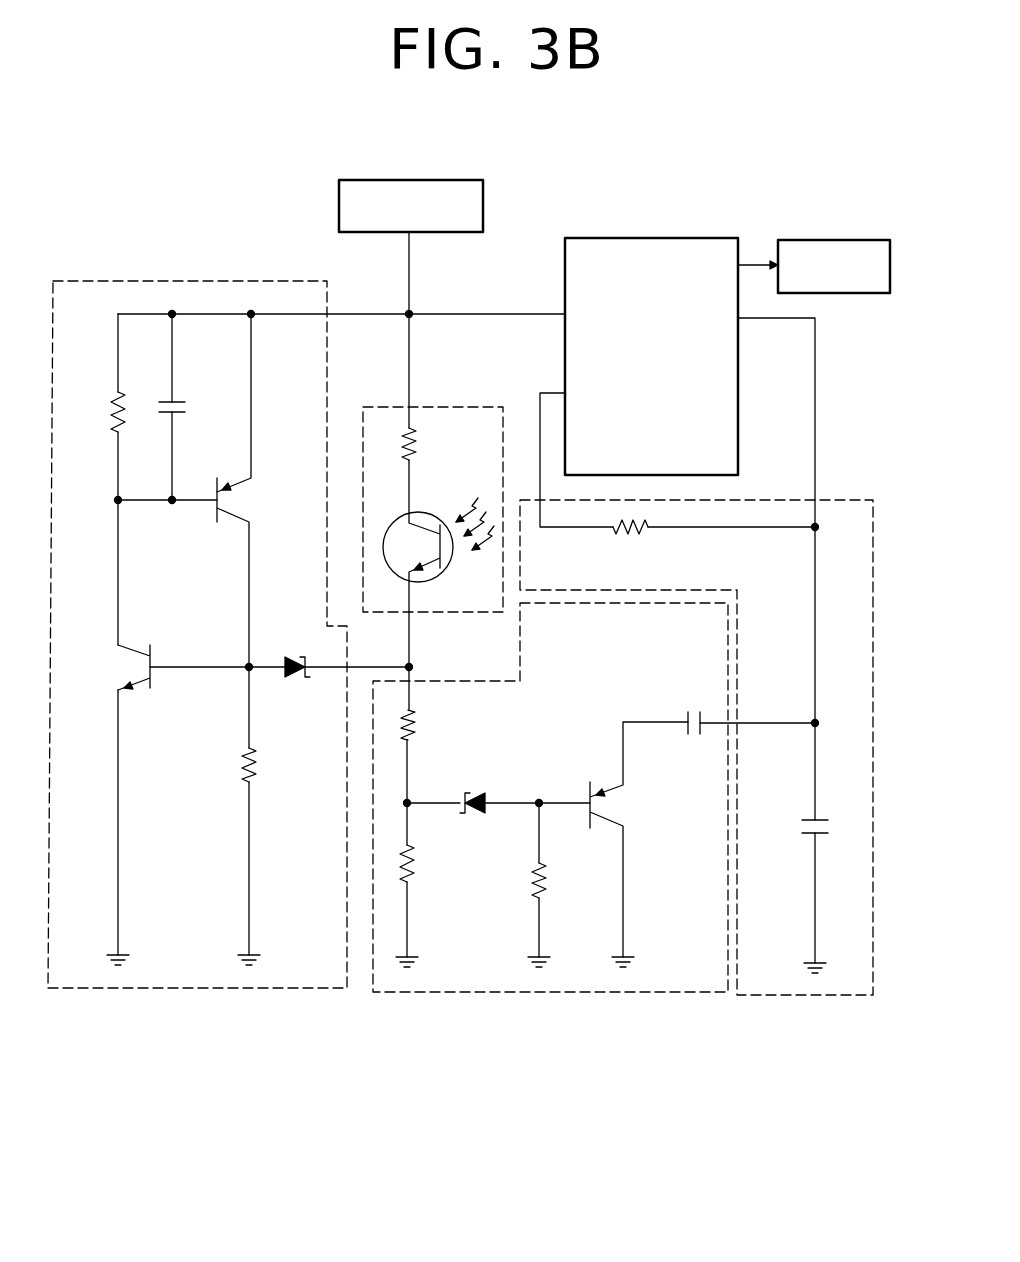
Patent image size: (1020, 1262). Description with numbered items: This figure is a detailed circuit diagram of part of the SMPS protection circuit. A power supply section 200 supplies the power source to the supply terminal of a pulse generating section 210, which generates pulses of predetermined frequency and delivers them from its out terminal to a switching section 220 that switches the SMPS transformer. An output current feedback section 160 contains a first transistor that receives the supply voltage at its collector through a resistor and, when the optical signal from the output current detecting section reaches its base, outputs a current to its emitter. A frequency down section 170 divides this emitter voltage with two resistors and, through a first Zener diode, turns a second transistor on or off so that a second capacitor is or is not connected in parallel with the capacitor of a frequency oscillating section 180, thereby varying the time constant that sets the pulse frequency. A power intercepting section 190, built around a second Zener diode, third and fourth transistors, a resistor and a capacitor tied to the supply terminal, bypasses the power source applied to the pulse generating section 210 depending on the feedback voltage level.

The output current feedback section 160 is at (451, 405).
The frequency down section 170 is at (548, 994).
The frequency oscillating section 180 is at (796, 996).
The power intercepting section 190 is at (190, 278).
The power supply section 200 is at (406, 178).
The pulse generating section 210 is at (646, 238).
The switching section 220 is at (827, 240).